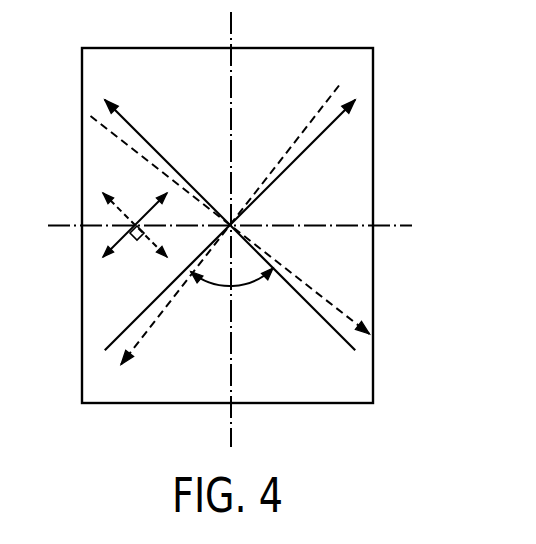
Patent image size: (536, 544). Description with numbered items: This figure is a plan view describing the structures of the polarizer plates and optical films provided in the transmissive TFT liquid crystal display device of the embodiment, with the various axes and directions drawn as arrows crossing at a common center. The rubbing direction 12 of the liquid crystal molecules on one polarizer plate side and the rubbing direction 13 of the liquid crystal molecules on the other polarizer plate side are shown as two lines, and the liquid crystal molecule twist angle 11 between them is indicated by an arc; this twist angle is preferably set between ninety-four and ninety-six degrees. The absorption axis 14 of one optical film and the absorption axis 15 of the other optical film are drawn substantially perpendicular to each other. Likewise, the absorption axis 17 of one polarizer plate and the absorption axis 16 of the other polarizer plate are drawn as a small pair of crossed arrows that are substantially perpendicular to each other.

The liquid crystal molecule twist angle 11 is at (255, 280).
The rubbing direction 12 is at (308, 152).
The rubbing direction 13 is at (325, 298).
The absorption axis 14 is at (162, 157).
The absorption axis 15 is at (143, 338).
The absorption axis 16 is at (122, 213).
The absorption axis 17 is at (113, 242).